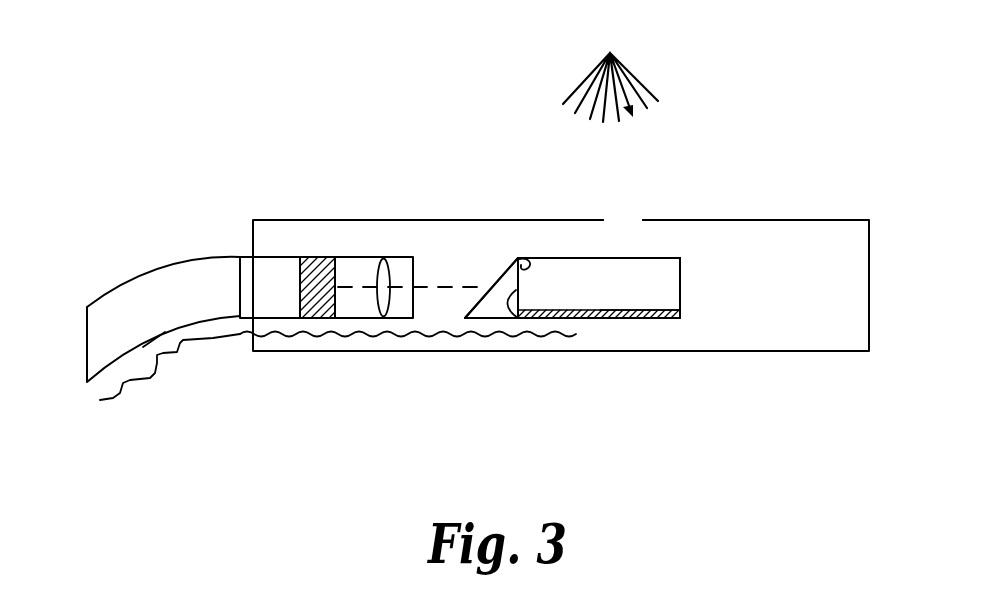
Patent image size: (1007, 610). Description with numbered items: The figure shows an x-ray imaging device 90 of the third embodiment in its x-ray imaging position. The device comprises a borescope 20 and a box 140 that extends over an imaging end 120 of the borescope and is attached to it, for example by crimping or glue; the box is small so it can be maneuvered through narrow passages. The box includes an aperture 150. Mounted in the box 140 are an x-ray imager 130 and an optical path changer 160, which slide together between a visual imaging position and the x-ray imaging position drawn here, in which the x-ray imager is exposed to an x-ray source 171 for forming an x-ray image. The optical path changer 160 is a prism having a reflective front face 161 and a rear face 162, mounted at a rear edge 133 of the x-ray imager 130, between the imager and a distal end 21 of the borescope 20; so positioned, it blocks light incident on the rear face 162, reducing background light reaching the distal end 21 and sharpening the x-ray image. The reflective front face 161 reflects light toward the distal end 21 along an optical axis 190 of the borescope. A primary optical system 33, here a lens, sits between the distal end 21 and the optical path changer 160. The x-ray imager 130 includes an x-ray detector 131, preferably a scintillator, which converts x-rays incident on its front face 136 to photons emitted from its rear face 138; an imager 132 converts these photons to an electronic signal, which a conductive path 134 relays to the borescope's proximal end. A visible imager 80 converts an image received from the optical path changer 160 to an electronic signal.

The borescope 20 is at (168, 317).
The distal end of the borescope 21 is at (267, 272).
The primary optical system 33 is at (382, 276).
The visible imager 80 is at (313, 258).
The x-ray imaging device 90 is at (845, 480).
The imaging end of the borescope 120 is at (253, 240).
The x-ray imager 130 is at (697, 300).
The x-ray detector 131 is at (665, 280).
The imager 132 is at (677, 318).
The rear edge of the x-ray imager 133 is at (518, 258).
The conductive path 134 is at (281, 334).
The front face of the x-ray detector 136 is at (670, 255).
The rear face of the x-ray detector 138 is at (648, 306).
The box 140 is at (793, 333).
The aperture 150 is at (632, 223).
The optical path changer 160 is at (485, 313).
The reflective front face 161 is at (487, 296).
The rear face of the optical path changer 162 is at (500, 316).
The x-ray source 171 is at (610, 53).
The optical axis of the borescope 190 is at (433, 288).